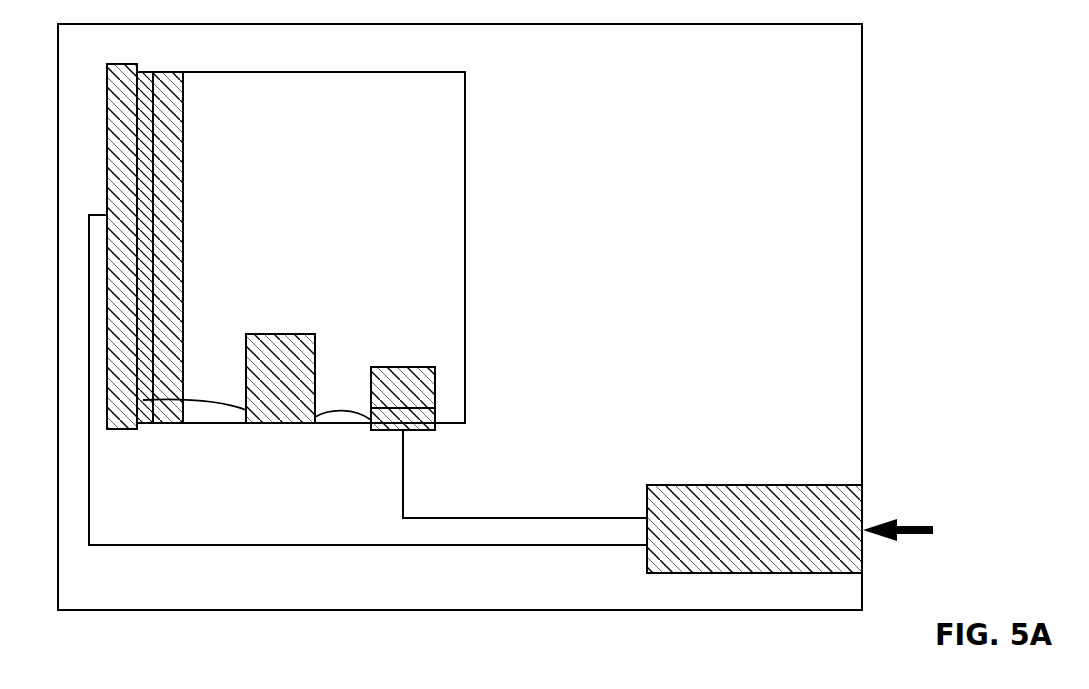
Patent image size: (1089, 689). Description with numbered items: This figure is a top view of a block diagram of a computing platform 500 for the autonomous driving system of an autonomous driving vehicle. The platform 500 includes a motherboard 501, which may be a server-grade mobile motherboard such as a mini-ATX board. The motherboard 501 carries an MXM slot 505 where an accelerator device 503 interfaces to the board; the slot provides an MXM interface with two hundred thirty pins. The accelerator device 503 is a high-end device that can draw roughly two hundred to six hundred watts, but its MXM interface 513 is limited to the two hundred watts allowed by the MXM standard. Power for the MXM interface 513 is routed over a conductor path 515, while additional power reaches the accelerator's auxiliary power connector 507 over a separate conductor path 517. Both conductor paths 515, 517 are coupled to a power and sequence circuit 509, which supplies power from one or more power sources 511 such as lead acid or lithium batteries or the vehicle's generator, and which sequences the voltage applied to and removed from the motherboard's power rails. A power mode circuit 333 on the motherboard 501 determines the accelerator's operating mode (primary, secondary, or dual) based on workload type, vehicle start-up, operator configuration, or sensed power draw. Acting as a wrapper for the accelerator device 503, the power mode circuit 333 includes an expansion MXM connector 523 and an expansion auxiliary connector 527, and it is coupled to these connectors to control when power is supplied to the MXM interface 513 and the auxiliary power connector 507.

The computing platform 500 is at (950, 72).
The motherboard 501 is at (672, 236).
The accelerator device 503 is at (402, 171).
The MXM slot 505 is at (108, 430).
The expansion MXM connector 523 is at (138, 72).
The MXM interface 513 is at (183, 168).
The power mode circuit 333 is at (286, 334).
The auxiliary power connector 507 is at (383, 367).
The expansion auxiliary connector 527 is at (423, 428).
The conductor path 517 is at (463, 518).
The conductor path 515 is at (212, 545).
The power and sequence circuit 509 is at (777, 485).
The power source 511 is at (925, 525).